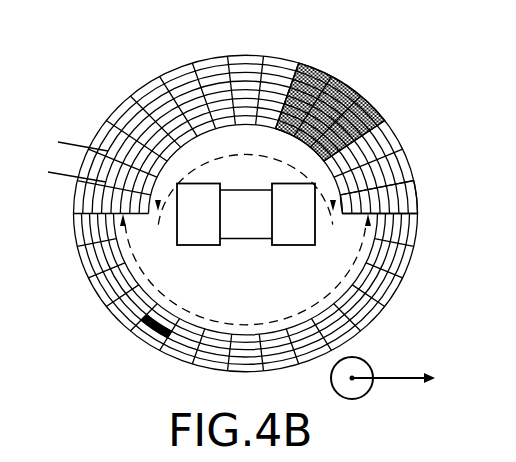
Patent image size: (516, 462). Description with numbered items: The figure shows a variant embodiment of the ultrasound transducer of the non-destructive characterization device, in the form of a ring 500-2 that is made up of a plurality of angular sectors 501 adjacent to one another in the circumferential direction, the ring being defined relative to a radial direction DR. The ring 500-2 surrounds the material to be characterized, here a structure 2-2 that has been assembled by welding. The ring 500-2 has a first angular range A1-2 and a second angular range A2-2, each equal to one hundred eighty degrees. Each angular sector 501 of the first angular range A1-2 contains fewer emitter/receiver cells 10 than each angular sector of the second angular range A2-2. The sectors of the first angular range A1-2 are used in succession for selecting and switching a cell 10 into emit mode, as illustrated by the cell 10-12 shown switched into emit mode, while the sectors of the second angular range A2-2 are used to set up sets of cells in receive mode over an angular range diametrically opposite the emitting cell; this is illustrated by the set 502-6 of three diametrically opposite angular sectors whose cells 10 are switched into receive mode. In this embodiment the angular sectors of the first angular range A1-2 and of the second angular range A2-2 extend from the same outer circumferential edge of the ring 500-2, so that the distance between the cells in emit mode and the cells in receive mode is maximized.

The ring 500-2 is at (138, 74).
The set of diametrically opposite angular sectors 502-6 is at (340, 75).
The angular sector 501 is at (63, 131).
The emitter/receiver cell 10 is at (407, 171).
The cell switched into emit mode 10-12 is at (142, 333).
The structure assembled by welding 2-2 is at (265, 226).
The second angular range A2-2 is at (247, 129).
The first angular range A1-2 is at (250, 328).
The radial direction DR is at (383, 375).